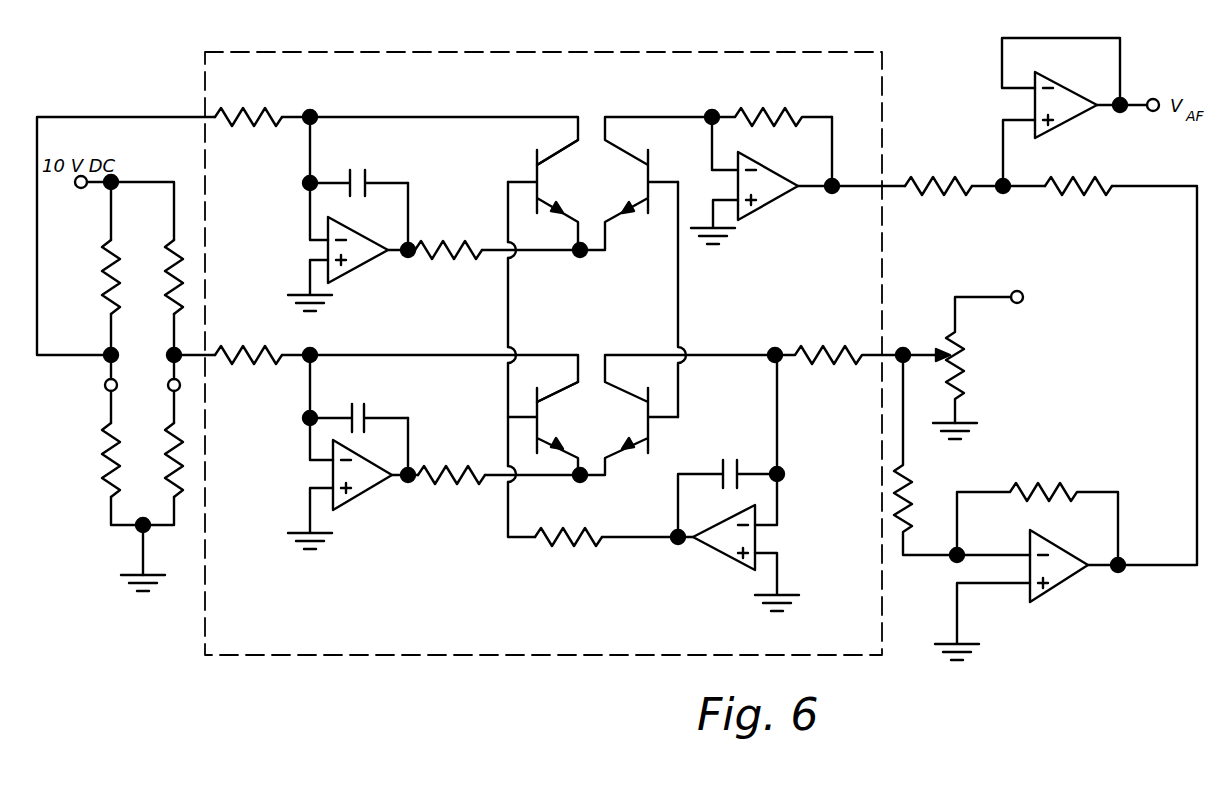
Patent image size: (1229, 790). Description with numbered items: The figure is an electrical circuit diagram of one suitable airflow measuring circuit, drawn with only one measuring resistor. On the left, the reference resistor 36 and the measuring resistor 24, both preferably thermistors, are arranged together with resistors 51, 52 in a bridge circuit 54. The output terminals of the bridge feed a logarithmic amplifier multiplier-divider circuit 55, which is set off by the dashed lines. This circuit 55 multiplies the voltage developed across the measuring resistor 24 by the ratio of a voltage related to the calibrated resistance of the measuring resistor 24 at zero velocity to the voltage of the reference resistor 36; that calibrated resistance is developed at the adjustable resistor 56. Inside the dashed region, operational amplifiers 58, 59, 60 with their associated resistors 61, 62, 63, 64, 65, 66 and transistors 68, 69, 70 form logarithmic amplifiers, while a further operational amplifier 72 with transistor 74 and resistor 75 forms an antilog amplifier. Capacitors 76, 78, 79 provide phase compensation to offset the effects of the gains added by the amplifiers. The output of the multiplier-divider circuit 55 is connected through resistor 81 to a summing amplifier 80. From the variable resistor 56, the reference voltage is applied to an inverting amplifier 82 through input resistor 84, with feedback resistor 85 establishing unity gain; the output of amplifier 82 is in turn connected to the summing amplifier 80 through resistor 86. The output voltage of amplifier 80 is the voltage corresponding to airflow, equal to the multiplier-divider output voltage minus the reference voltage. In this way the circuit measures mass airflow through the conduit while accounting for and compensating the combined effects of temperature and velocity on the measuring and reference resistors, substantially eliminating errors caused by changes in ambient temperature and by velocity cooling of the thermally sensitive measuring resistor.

The measuring resistor 24 is at (104, 490).
The reference resistor 36 is at (180, 487).
The resistor 51 is at (118, 245).
The resistor 52 is at (181, 253).
The bridge circuit 54 is at (122, 530).
The logarithmic amplifier multiplier-divider circuit 55 is at (880, 78).
The adjustable resistor 56 is at (962, 392).
The operational amplifier 58 is at (352, 268).
The operational amplifier 59 is at (358, 495).
The operational amplifier 60 is at (718, 557).
The resistor 61 is at (266, 126).
The resistor 62 is at (238, 364).
The resistor 63 is at (440, 487).
The resistor 64 is at (440, 262).
The resistor 65 is at (552, 548).
The resistor 66 is at (839, 361).
The transistor 68 is at (530, 164).
The transistor 69 is at (549, 428).
The transistor 70 is at (674, 415).
The operational amplifier 72 is at (770, 208).
The transistor 74 is at (656, 168).
The resistor 75 is at (780, 128).
The capacitor 76 is at (368, 176).
The capacitor 78 is at (366, 425).
The capacitor 79 is at (725, 490).
The summing amplifier 80 is at (1058, 84).
The resistor 81 is at (930, 197).
The inverting amplifier 82 is at (1060, 584).
The input resistor 84 is at (893, 512).
The feedback resistor 85 is at (1062, 500).
The resistor 86 is at (1070, 197).